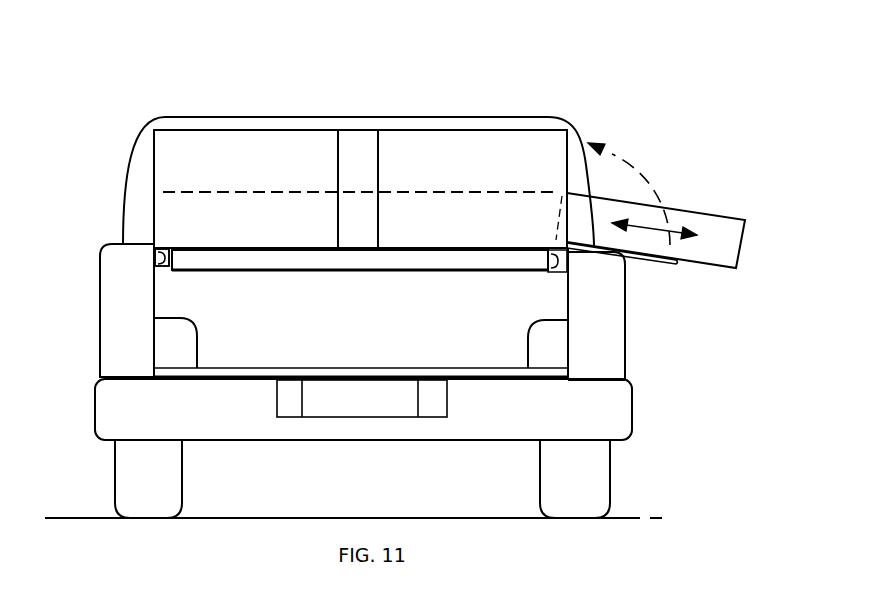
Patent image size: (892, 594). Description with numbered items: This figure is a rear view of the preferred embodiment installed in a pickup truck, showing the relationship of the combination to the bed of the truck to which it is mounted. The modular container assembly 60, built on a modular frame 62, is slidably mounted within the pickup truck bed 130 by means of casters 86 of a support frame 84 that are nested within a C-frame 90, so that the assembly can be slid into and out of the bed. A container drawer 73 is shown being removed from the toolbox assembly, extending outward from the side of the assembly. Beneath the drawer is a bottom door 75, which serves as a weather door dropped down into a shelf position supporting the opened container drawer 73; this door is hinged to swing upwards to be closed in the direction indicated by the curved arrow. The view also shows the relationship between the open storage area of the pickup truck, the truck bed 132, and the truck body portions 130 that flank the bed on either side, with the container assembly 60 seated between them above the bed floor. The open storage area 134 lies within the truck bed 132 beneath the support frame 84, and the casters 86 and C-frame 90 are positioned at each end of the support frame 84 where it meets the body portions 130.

The modular container assembly 60 is at (236, 122).
The modular frame 62 is at (355, 143).
The container drawer 73 is at (707, 212).
The bottom door 75 is at (655, 264).
The support frame 84 is at (307, 258).
The casters 86 is at (155, 255).
The C-frame 90 is at (160, 267).
The pickup truck bed 130 is at (118, 300).
The truck bed 132 is at (567, 340).
The cargo area 134 is at (262, 326).